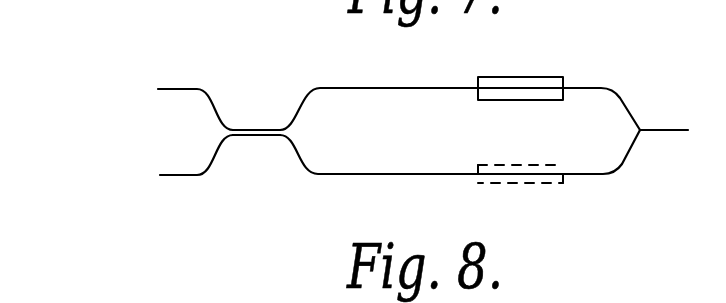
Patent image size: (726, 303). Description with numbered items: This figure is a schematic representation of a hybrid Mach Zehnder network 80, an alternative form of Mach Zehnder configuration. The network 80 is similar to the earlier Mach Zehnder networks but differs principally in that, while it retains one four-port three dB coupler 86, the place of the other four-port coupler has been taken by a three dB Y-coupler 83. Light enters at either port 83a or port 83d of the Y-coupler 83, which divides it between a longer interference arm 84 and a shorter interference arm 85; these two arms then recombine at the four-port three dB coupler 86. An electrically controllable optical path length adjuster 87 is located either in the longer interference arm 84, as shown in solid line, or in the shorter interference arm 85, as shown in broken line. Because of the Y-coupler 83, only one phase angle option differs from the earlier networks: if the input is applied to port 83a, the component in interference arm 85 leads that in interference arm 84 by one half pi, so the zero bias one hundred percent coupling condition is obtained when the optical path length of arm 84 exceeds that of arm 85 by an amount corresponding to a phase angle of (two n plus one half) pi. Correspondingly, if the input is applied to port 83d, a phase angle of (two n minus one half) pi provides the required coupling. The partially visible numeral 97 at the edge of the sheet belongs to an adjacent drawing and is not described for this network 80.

The hybrid Mach Zehnder network 80 is at (449, 147).
The port 83a is at (177, 89).
The port 83d is at (165, 177).
The 3 dB Y-coupler 83 is at (255, 135).
The longer interference arm 84 is at (390, 87).
The shorter interference arm 85 is at (368, 174).
The 4-port 3 dB coupler 86 is at (627, 131).
The electrically controllable optical path length adjuster 87 is at (533, 77).
The partial numeral from adjacent figure 97 is at (648, 291).